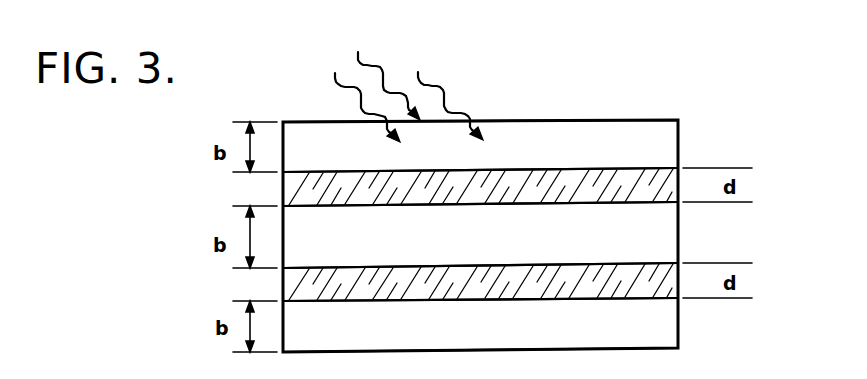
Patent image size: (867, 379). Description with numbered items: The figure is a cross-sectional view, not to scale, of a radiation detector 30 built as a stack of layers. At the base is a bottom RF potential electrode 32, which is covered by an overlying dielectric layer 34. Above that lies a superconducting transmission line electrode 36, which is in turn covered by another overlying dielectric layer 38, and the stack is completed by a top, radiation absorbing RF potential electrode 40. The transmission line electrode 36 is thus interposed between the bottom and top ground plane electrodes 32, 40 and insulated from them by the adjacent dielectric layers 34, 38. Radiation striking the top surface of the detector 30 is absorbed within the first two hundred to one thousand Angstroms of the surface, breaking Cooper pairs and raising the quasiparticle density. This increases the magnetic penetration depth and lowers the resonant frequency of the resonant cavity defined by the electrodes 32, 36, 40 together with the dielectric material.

The radiation detector 30 is at (689, 108).
The bottom RF potential electrode 32 is at (680, 322).
The dielectric layer 34 is at (283, 287).
The superconducting transmission line electrode 36 is at (680, 243).
The dielectric layer 38 is at (283, 193).
The top radiation absorbing RF potential electrode 40 is at (680, 138).